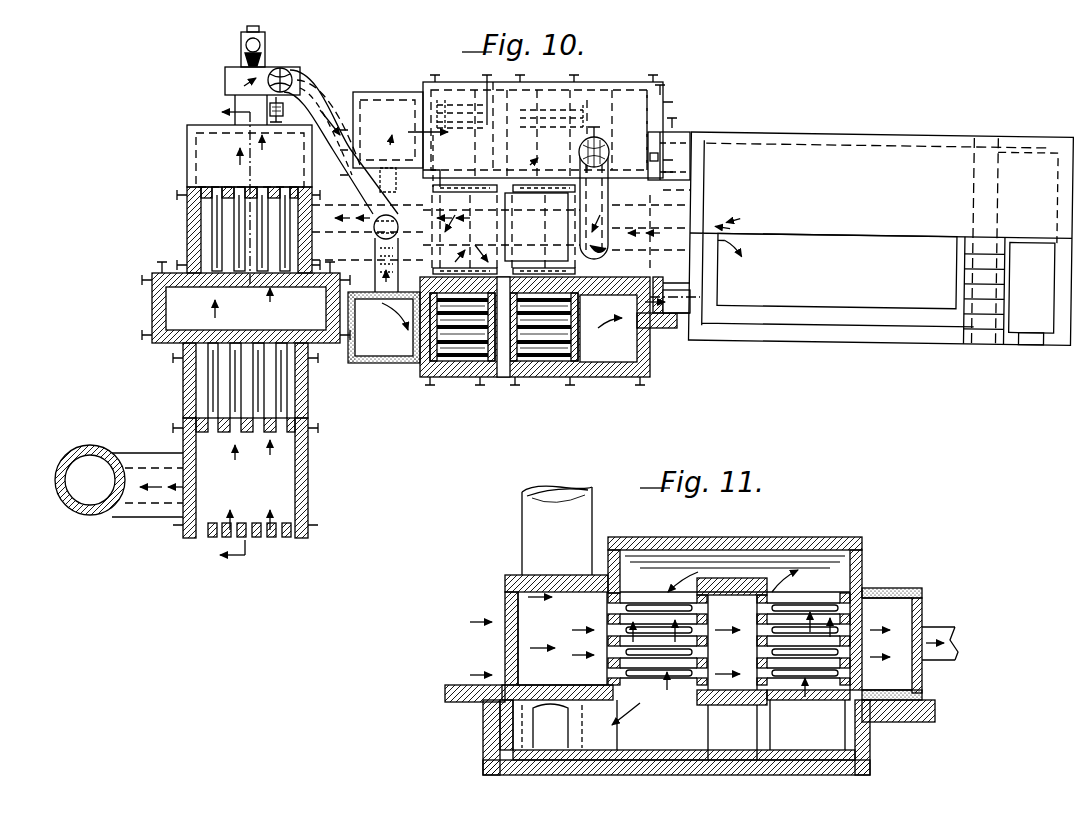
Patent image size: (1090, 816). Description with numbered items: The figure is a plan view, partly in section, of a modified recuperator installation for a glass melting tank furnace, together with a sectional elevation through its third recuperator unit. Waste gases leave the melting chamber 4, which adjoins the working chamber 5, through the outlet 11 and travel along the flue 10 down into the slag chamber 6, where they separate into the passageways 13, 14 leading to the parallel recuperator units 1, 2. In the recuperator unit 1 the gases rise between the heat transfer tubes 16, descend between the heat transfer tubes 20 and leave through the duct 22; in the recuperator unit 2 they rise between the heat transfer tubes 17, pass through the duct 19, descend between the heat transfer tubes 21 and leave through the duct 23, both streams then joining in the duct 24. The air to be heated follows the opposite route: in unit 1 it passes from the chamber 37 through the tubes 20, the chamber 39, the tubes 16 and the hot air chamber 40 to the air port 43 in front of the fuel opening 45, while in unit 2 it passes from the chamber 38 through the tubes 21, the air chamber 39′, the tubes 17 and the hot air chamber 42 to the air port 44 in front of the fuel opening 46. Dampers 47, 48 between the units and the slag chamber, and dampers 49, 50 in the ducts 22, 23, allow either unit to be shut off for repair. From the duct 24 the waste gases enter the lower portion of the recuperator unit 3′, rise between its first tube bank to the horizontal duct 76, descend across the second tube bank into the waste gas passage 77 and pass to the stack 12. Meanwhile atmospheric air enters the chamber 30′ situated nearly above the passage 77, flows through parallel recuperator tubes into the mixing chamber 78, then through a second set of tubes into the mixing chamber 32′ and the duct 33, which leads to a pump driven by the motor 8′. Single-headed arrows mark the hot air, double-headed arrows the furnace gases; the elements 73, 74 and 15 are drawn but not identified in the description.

In FIG. 10, the motor 8′ is at (241, 45).
In FIG. 10, the duct 24 is at (343, 215).
In FIG. 10, the duct 33 is at (230, 104).
In FIG. 11, the duct 33 is at (948, 628).
In FIG. 10, the mixing chamber 32′ is at (200, 155).
In FIG. 11, the mixing chamber 32′ is at (892, 644).
In FIG. 10, the recuperator unit 3′ is at (196, 232).
In FIG. 11, the recuperator unit 3′ is at (862, 554).
In FIG. 10, the chamber 30′ is at (245, 496).
In FIG. 11, the chamber 30′ is at (539, 630).
In FIG. 10, the stack 12 is at (62, 500).
In FIG. 11, the stack 12 is at (522, 538).
In FIG. 10, the chamber 38 is at (385, 98).
In FIG. 10, the recuperator unit 2 is at (452, 95).
In FIG. 10, the heat transfer tubes 21 is at (446, 100).
In FIG. 10, the heat transfer tubes 17 is at (532, 105).
In FIG. 10, the duct 19 is at (503, 100).
In FIG. 10, the hot air chamber 42 is at (612, 90).
In FIG. 10, the air chamber 39′ is at (500, 136).
In FIG. 10, the duct 23 is at (445, 185).
In FIG. 10, the damper 50 is at (475, 185).
In FIG. 10, the damper 48 is at (555, 185).
In FIG. 10, the passageway 14 is at (547, 134).
In FIG. 10, the slag chamber 6 is at (505, 218).
In FIG. 10, the passageway 13 is at (540, 231).
In FIG. 10, the damper 47 is at (533, 268).
In FIG. 10, the duct 22 is at (467, 268).
In FIG. 10, the damper 49 is at (449, 257).
In FIG. 10, the tube 74 is at (602, 146).
In FIG. 10, the fuel opening 46 is at (648, 158).
In FIG. 10, the duct 73 is at (604, 226).
In FIG. 10, the air port 44 is at (683, 132).
In FIG. 10, the recuperator unit 1 is at (452, 370).
In FIG. 10, the chamber 39 is at (503, 377).
In FIG. 10, the hot air chamber 40 is at (612, 365).
In FIG. 10, the heat transfer tubes 16 is at (575, 344).
In FIG. 10, the fuel opening 45 is at (631, 320).
In FIG. 10, the air port 43 is at (686, 318).
In FIG. 10, the chamber 37 is at (366, 360).
In FIG. 10, the heat transfer tubes 20 is at (415, 340).
In FIG. 10, the melting chamber 4 is at (866, 155).
In FIG. 10, the working chamber 5 is at (1030, 322).
In FIG. 10, the flue 10 is at (700, 215).
In FIG. 10, the outlet 11 is at (705, 228).
In FIG. 11, the mixing chamber 78 is at (729, 645).
In FIG. 11, the horizontal duct 76 is at (733, 626).
In FIG. 11, the waste gas passage 77 is at (603, 740).
In FIG. 11, the chamber 15 is at (773, 725).